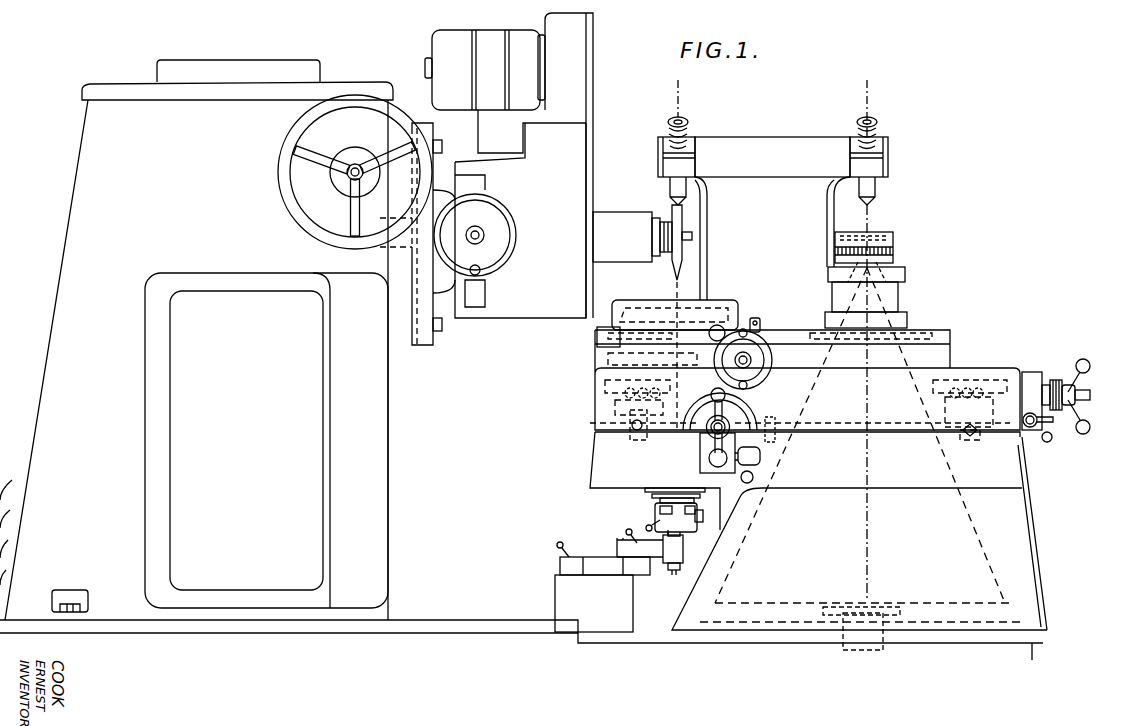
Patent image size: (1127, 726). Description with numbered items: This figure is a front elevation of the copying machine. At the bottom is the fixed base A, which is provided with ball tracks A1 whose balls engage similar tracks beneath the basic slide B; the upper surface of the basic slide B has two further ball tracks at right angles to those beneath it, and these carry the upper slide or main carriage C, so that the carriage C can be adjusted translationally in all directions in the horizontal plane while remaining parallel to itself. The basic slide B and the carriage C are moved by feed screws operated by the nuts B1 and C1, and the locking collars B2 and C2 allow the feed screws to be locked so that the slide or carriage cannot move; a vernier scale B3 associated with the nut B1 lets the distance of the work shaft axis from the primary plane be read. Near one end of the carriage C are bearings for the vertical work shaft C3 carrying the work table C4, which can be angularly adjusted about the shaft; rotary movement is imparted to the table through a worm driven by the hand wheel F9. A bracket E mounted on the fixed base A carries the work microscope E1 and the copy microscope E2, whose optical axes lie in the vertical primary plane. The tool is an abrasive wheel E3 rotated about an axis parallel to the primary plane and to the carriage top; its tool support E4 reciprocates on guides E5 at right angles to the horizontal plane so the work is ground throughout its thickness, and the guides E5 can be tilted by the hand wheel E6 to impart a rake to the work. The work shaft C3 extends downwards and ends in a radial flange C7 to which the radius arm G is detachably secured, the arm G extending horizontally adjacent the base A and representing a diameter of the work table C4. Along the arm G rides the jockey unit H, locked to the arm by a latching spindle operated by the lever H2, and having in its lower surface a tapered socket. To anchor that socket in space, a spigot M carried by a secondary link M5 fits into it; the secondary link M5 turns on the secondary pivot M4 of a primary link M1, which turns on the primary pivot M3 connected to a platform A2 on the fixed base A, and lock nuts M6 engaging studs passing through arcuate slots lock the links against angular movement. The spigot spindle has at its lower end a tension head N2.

The bracket E is at (772, 145).
The work microscope E1 is at (687, 127).
The copy microscope E2 is at (878, 128).
The abrasive wheel E3 is at (680, 278).
The tool support E4 is at (563, 108).
The guides E5 is at (593, 170).
The hand wheel E6 is at (300, 212).
The upper slide (main carriage) C is at (600, 347).
The nut C1 is at (1087, 367).
The locking collar C2 is at (1032, 428).
The work shaft C3 is at (673, 494).
The work table C4 is at (703, 308).
The radial flange C7 is at (648, 488).
The basic slide B is at (605, 397).
The nut B1 is at (710, 442).
The locking collar (locking ring) B2 is at (743, 467).
The vernier scale B3 is at (730, 420).
The fixed base A is at (647, 442).
The ball tracks A1 is at (627, 428).
The platform A2 is at (562, 605).
The hand wheel F9 is at (763, 343).
The radius arm G is at (692, 498).
The jockey unit (casing) H is at (685, 515).
The lever H2 is at (648, 526).
The spigot M is at (687, 530).
The primary link M1 is at (567, 573).
The primary pivot M3 is at (622, 560).
The secondary pivot M4 is at (618, 540).
The secondary link M5 is at (677, 547).
The lock nuts M6 is at (627, 531).
The tension head N2 is at (675, 570).